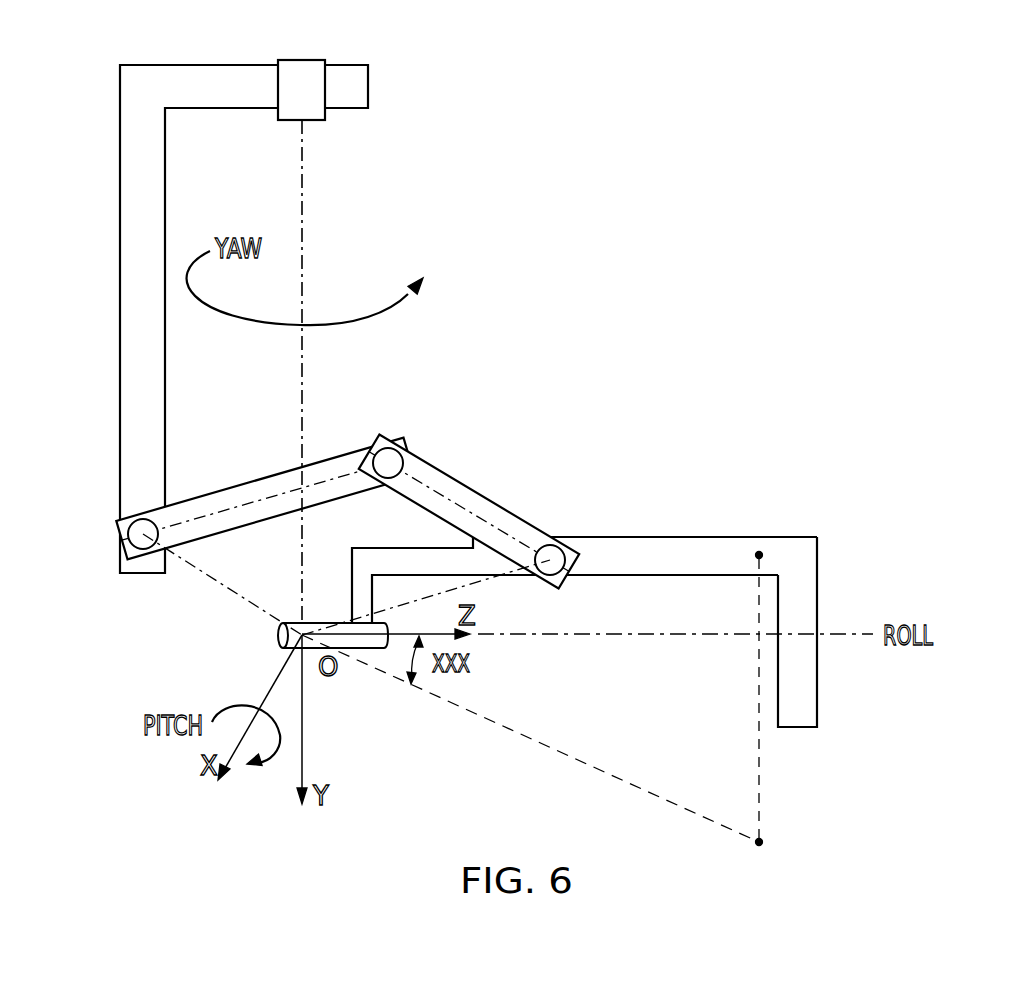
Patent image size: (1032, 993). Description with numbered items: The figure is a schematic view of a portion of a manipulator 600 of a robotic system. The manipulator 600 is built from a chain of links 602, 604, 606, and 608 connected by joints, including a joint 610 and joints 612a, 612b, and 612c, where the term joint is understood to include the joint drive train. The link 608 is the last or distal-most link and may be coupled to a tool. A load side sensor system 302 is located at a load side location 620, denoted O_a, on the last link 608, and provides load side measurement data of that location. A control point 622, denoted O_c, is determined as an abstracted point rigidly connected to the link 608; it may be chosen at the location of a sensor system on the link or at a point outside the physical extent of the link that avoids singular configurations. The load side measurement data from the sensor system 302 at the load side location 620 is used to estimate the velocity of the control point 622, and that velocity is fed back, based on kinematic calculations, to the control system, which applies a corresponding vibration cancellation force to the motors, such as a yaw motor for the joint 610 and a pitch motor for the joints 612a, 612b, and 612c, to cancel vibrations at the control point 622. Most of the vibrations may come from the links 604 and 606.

The manipulator 600 is at (620, 100).
The link 602 is at (128, 292).
The link 604 is at (245, 493).
The link 606 is at (475, 503).
The last link 608 is at (798, 718).
The joint 610 is at (296, 70).
The joint 612a is at (122, 538).
The joint 612b is at (385, 446).
The joint 612c is at (555, 545).
The load side location 620 is at (758, 550).
The control point 622 is at (765, 842).
The load side sensor system 302 is at (780, 517).